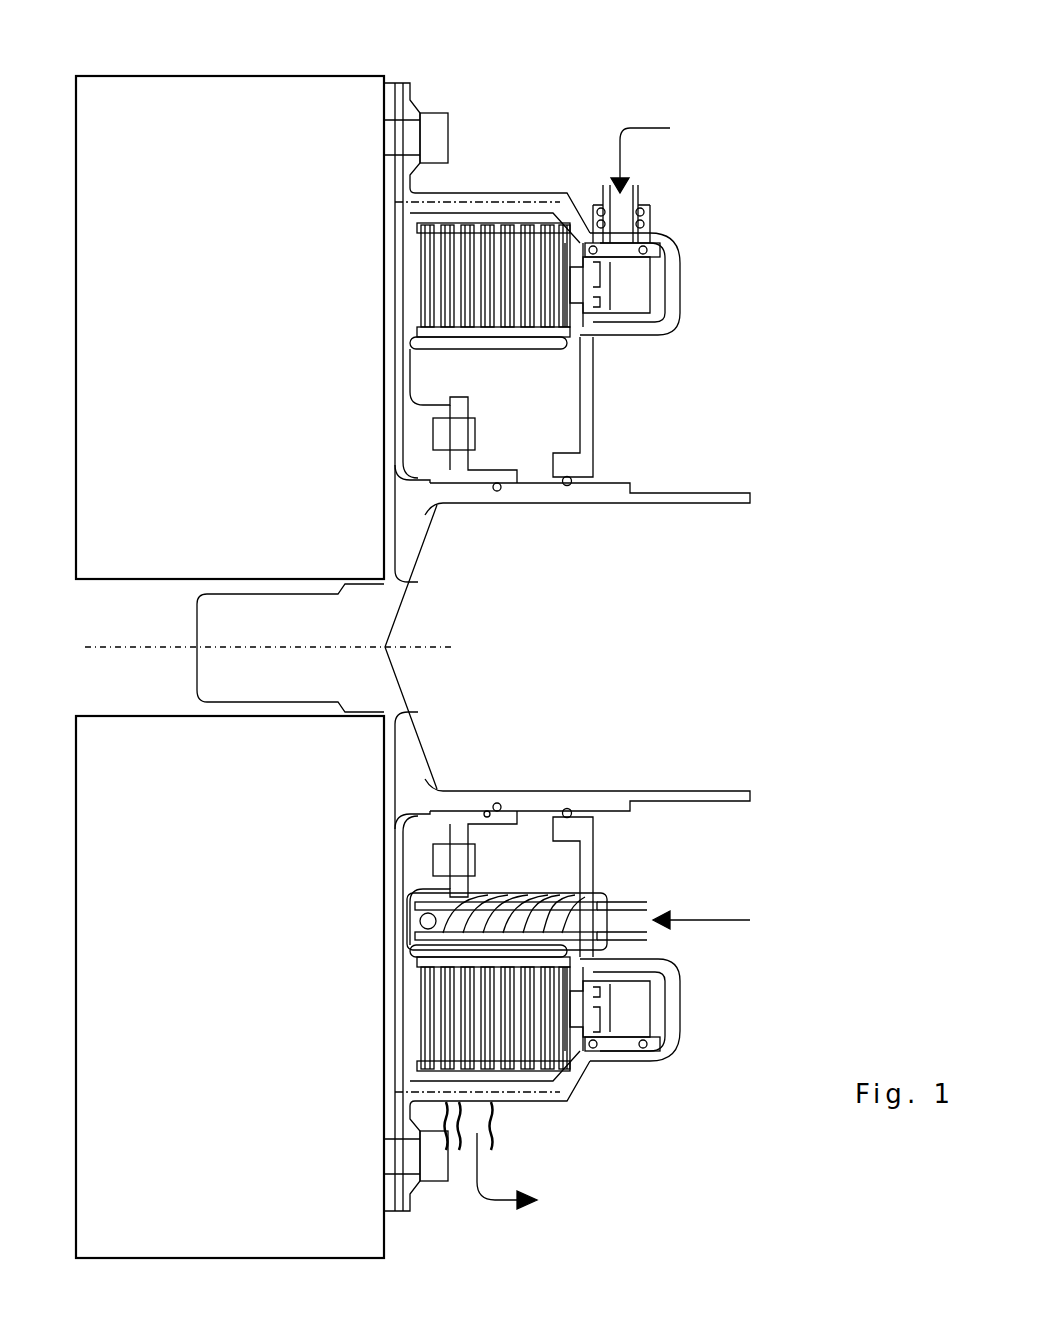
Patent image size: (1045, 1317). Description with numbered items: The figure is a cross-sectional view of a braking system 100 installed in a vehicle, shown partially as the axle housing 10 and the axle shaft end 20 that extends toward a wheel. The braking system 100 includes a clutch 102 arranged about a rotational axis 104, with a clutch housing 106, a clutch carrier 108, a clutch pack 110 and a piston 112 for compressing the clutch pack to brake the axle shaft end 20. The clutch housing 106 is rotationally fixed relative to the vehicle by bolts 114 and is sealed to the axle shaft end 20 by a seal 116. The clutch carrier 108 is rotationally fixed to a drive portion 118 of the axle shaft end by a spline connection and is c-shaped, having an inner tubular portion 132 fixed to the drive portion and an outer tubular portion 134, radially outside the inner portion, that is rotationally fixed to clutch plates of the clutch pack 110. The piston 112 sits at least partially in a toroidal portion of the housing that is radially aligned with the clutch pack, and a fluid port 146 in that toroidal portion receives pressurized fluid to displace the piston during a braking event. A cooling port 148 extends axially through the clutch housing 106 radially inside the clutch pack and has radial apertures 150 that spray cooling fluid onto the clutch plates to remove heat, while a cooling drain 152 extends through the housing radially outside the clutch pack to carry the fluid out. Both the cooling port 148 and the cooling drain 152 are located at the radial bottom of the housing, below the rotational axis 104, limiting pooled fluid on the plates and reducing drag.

The axle housing 10 is at (240, 303).
The axle shaft end 20 is at (733, 494).
The braking system 100 is at (759, 254).
The clutch 102 is at (551, 169).
The rotational axis 104 is at (148, 645).
The clutch housing 106 is at (598, 428).
The clutch carrier 108 is at (508, 349).
The clutch pack 110 is at (405, 234).
The piston 112 is at (593, 283).
The bolts 114 is at (438, 132).
The seal 116 is at (570, 482).
The drive portion 118 is at (497, 506).
The tubular portion 132 is at (487, 820).
The tubular portion 134 is at (552, 950).
The fluid port 146 is at (633, 197).
The cooling port 148 is at (623, 937).
The radial apertures 150 is at (485, 895).
The cooling drain 152 is at (493, 1112).